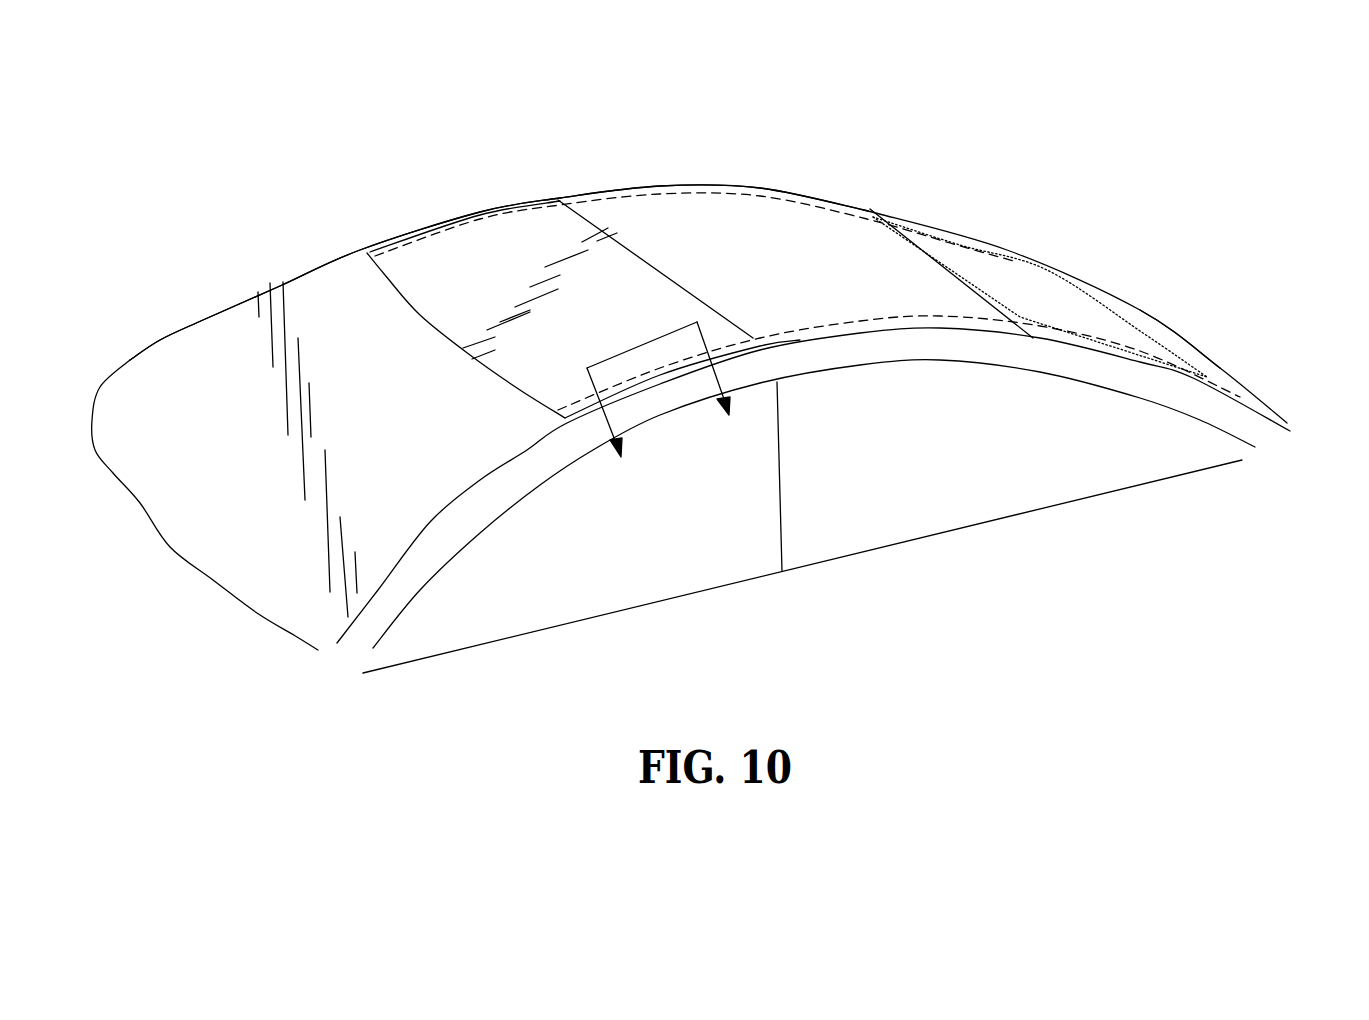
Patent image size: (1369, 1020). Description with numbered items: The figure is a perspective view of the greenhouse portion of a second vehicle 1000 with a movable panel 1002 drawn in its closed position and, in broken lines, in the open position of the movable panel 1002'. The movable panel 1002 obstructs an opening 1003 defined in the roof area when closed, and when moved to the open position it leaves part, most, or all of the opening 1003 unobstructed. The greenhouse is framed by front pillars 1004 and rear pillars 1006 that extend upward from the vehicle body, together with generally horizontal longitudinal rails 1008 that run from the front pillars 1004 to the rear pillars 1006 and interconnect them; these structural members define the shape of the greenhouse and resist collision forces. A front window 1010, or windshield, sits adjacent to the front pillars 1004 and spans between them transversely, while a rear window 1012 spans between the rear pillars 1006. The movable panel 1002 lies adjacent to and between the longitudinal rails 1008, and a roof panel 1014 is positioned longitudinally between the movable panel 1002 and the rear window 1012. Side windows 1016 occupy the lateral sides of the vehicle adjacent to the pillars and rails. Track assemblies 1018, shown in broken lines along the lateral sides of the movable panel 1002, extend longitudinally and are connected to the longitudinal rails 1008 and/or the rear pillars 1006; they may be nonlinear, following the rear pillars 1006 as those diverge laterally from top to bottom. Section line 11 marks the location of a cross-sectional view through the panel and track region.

The second vehicle 1000 is at (186, 174).
The movable panel 1002 is at (551, 309).
The movable panel in open position 1002' is at (1040, 297).
The opening 1003 is at (445, 232).
The front pillars 1004 is at (207, 320).
The rear pillars 1006 is at (934, 227).
The longitudinal rails 1008 is at (690, 183).
The front window 1010 is at (176, 532).
The rear window 1012 is at (1186, 342).
The roof panel 1014 is at (800, 200).
The side windows 1016 is at (655, 602).
The track assemblies 1018 is at (528, 203).
The section line 11 is at (667, 402).